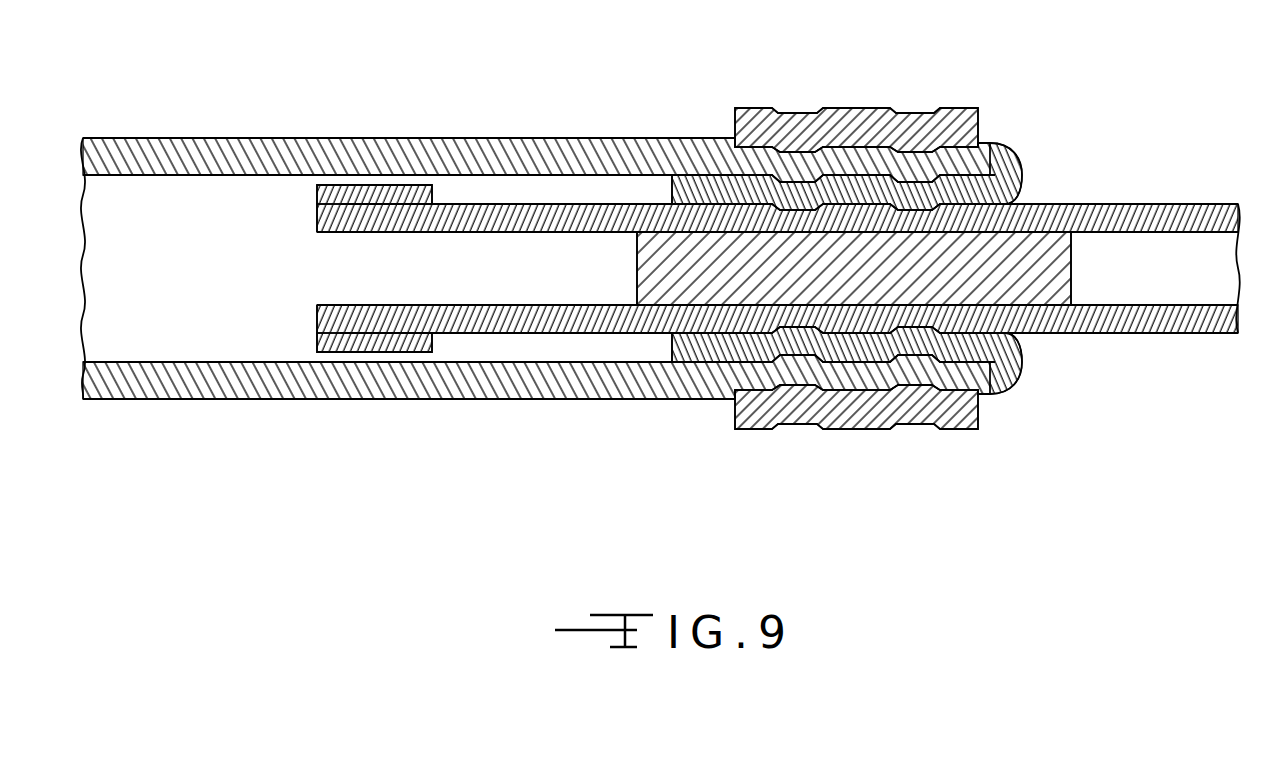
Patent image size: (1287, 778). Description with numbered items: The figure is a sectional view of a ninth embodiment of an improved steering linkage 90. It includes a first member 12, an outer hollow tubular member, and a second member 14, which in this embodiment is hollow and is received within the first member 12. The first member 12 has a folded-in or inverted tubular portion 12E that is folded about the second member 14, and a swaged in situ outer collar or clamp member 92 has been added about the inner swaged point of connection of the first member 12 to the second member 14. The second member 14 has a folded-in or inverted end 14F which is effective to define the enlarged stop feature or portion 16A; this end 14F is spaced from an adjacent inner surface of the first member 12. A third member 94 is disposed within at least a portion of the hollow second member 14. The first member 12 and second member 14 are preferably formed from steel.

The first member 12 is at (358, 130).
The folded-in/inverted portion 12E is at (995, 190).
The second member 14 is at (710, 317).
The folded-in or inverted end 14F is at (387, 342).
The enlarged stop portion 16A is at (395, 215).
The steering linkage 90 is at (909, 233).
The outer collar or clamp member 92 is at (851, 110).
The third member 94 is at (1055, 260).